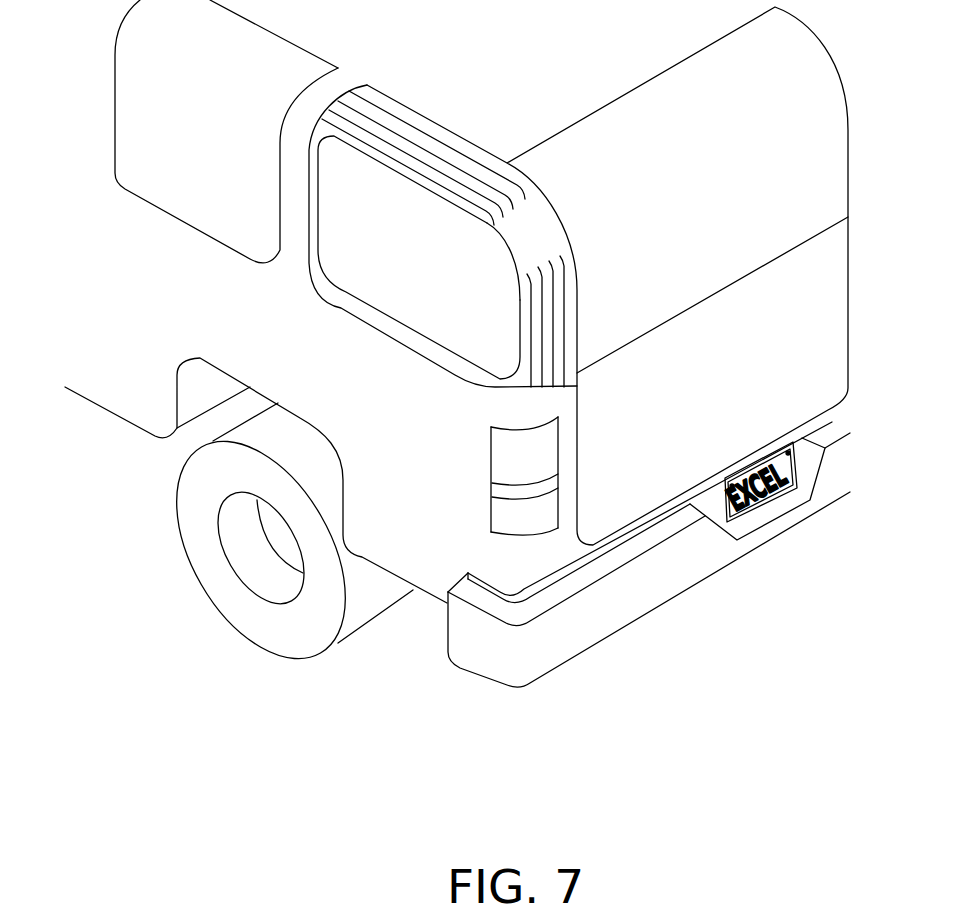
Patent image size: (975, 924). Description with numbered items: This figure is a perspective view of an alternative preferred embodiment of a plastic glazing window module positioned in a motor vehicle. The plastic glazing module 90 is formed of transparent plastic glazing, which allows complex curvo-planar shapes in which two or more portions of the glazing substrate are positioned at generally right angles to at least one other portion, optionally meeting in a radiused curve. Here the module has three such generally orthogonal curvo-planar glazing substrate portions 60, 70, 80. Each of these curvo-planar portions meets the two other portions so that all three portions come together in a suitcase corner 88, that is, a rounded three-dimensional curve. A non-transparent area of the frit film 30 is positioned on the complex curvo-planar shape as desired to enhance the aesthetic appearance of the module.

The frit film 30 is at (370, 95).
The curvo-planar glazing substrate portion 60 is at (440, 342).
The curvo-planar glazing substrate portion 70 is at (437, 140).
The curvo-planar glazing substrate portion 80 is at (560, 330).
The suitcase corner 88 is at (505, 242).
The plastic glazing module 90 is at (300, 305).